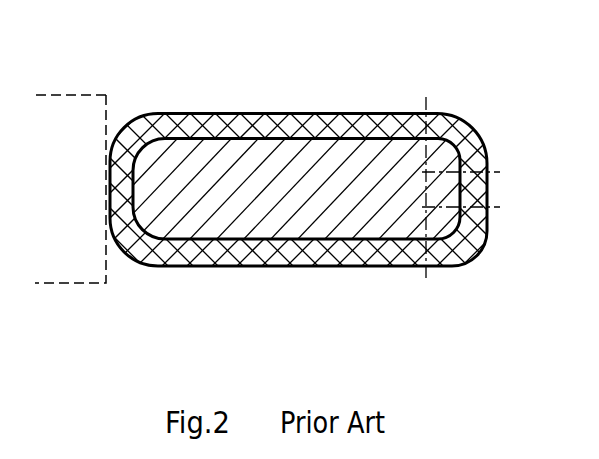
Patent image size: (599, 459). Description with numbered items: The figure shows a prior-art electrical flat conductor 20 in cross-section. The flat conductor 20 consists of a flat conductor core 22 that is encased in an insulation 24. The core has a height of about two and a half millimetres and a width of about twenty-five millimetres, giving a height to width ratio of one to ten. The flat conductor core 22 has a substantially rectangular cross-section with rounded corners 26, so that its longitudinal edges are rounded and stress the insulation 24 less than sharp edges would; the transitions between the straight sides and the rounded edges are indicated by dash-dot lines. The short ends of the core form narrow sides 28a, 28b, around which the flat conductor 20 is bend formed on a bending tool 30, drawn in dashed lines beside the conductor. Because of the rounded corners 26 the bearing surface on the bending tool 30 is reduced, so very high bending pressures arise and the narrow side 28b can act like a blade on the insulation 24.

The flat conductor 20 is at (501, 81).
The flat conductor core 22 is at (362, 163).
The insulation 24 is at (303, 127).
The rounded corners 26 is at (473, 242).
The narrow side 28a is at (466, 186).
The narrow side 28b is at (130, 196).
The bending tool 30 is at (75, 285).